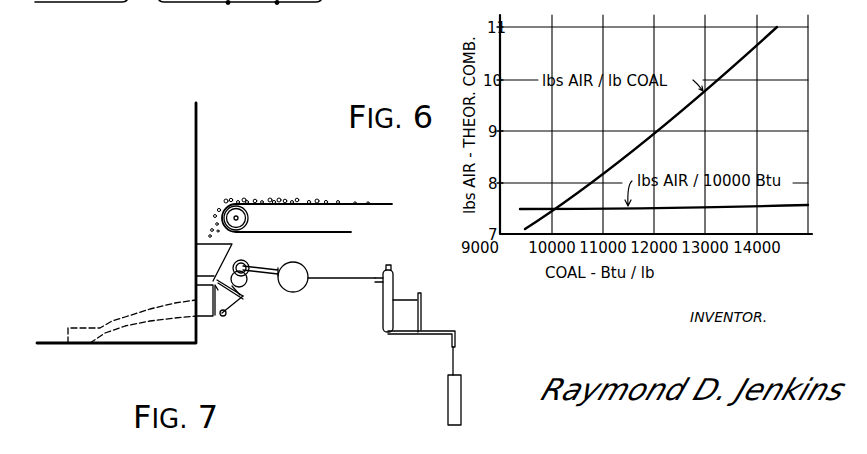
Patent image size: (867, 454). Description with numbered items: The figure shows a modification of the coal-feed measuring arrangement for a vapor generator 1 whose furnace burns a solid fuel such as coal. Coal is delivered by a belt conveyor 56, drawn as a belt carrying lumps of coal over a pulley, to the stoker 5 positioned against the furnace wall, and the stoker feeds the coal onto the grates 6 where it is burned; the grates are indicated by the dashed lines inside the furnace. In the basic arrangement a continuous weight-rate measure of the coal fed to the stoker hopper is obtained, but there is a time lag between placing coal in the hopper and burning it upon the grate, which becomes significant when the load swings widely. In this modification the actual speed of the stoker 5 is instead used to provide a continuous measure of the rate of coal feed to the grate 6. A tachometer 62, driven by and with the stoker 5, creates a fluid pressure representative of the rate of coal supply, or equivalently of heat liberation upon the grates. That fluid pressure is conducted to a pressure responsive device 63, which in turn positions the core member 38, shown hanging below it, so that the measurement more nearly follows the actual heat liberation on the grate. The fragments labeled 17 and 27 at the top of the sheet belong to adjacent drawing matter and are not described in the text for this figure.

The vapor generator 1 is at (114, 202).
The stoker 5 is at (240, 306).
The grates 6 is at (116, 318).
The conduit 17 is at (144, 0).
The conduit 27 is at (228, 3).
The core member 38 is at (447, 404).
The belt conveyor 56 is at (331, 204).
The tachometer 62 is at (287, 292).
The pressure responsive device 63 is at (382, 317).